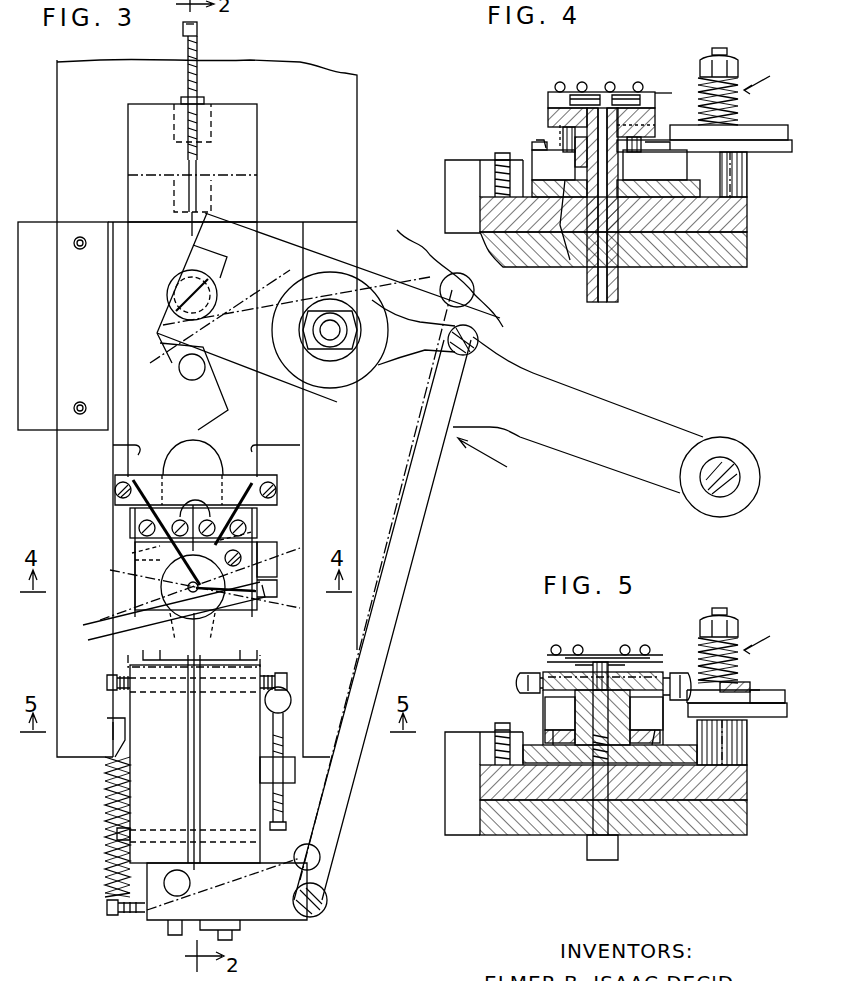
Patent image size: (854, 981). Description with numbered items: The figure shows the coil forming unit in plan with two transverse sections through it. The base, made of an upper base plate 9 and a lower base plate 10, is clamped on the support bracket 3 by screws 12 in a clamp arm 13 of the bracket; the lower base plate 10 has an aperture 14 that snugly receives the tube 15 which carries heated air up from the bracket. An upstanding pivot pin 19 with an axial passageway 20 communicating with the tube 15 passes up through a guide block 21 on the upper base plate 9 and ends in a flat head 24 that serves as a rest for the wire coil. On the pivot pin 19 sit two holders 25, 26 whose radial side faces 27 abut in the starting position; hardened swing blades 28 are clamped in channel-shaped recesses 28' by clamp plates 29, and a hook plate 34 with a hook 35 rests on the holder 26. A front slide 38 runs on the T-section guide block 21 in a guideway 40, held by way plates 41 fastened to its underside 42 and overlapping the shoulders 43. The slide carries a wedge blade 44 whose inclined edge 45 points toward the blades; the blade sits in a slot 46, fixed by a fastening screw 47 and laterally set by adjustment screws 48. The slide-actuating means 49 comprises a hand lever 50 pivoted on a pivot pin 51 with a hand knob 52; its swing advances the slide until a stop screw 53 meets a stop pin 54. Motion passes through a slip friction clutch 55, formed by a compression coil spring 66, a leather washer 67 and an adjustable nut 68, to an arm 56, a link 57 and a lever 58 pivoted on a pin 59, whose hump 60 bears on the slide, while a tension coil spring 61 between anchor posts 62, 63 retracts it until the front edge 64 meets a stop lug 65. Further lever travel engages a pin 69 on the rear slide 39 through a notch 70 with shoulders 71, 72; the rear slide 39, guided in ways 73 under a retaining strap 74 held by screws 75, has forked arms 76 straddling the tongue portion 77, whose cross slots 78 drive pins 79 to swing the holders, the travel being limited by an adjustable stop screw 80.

In FIG. 3, the support bracket 3 is at (57, 130).
In FIG. 4, the support bracket 3 is at (682, 250).
In FIG. 5, the support bracket 3 is at (515, 824).
In FIG. 4, the upper base plate 9 is at (496, 184).
In FIG. 5, the upper base plate 9 is at (496, 750).
In FIG. 4, the lower base plate 10 is at (742, 218).
In FIG. 5, the lower base plate 10 is at (742, 782).
In FIG. 3, the screws 12 is at (74, 249).
In FIG. 4, the screws 12 is at (496, 156).
In FIG. 5, the screws 12 is at (496, 726).
In FIG. 3, the clamp arm 13 is at (28, 233).
In FIG. 4, the clamp arm 13 is at (446, 170).
In FIG. 5, the clamp arm 13 is at (446, 752).
In FIG. 4, the aperture 14 is at (582, 262).
In FIG. 4, the tube 15 is at (618, 290).
In FIG. 5, the tube 15 is at (590, 860).
In FIG. 4, the pivot pin 19 is at (658, 173).
In FIG. 4, the axial passageway 20 is at (559, 173).
In FIG. 3, the guide block 21 is at (258, 652).
In FIG. 5, the guide block 21 is at (585, 765).
In FIG. 3, the head 24 is at (178, 603).
In FIG. 3, the holder 25 is at (135, 572).
In FIG. 4, the holder 25 is at (548, 115).
In FIG. 3, the holder 26 is at (262, 514).
In FIG. 4, the holder 26 is at (655, 120).
In FIG. 3, the side faces 27 is at (195, 515).
In FIG. 3, the swing blades 28 is at (200, 518).
In FIG. 4, the swing blades 28 is at (607, 74).
In FIG. 5, the swing blades 28 is at (605, 633).
In FIG. 4, the channel-shaped recesses 28' is at (590, 77).
In FIG. 5, the channel-shaped recesses 28' is at (601, 637).
In FIG. 3, the clamp plates 29 is at (138, 528).
In FIG. 4, the clamp plates 29 is at (565, 95).
In FIG. 5, the clamp plates 29 is at (560, 650).
In FIG. 3, the hook plate 34 is at (277, 560).
In FIG. 3, the hook 35 is at (276, 586).
In FIG. 3, the front slide 38 is at (132, 710).
In FIG. 5, the front slide 38 is at (548, 676).
In FIG. 3, the rear slide 39 is at (245, 152).
In FIG. 5, the guideway 40 is at (565, 765).
In FIG. 5, the way plates 41 is at (545, 733).
In FIG. 5, the underside 42 is at (545, 706).
In FIG. 5, the shoulders 43 is at (553, 675).
In FIG. 3, the wedge blade 44 is at (225, 613).
In FIG. 5, the wedge blade 44 is at (590, 660).
In FIG. 3, the edge 45 is at (245, 602).
In FIG. 3, the slot 46 is at (201, 775).
In FIG. 5, the slot 46 is at (606, 660).
In FIG. 3, the fastening screw 47 is at (112, 820).
In FIG. 3, the adjustment screws 48 is at (107, 680).
In FIG. 5, the adjustment screws 48 is at (518, 680).
In FIG. 3, the slide-actuating means 49 is at (491, 461).
In FIG. 3, the hand lever 50 is at (535, 380).
In FIG. 4, the hand lever 50 is at (772, 152).
In FIG. 5, the hand lever 50 is at (770, 717).
In FIG. 3, the pivot pin 51 is at (330, 322).
In FIG. 4, the pivot pin 51 is at (720, 48).
In FIG. 5, the pivot pin 51 is at (720, 608).
In FIG. 3, the hand knob 52 is at (722, 440).
In FIG. 3, the stop screw 53 is at (272, 744).
In FIG. 3, the stop pin 54 is at (290, 706).
In FIG. 5, the stop pin 54 is at (686, 734).
In FIG. 3, the slip friction clutch 55 is at (363, 291).
In FIG. 4, the slip friction clutch 55 is at (766, 75).
In FIG. 5, the slip friction clutch 55 is at (766, 635).
In FIG. 3, the arm 56 is at (400, 355).
In FIG. 4, the arm 56 is at (770, 125).
In FIG. 5, the arm 56 is at (775, 692).
In FIG. 3, the link 57 is at (422, 516).
In FIG. 5, the link 57 is at (766, 690).
In FIG. 3, the lever 58 is at (295, 918).
In FIG. 3, the pin 59 is at (172, 888).
In FIG. 3, the hump 60 is at (235, 870).
In FIG. 3, the tension coil spring 61 is at (106, 856).
In FIG. 3, the anchor post 62 is at (112, 726).
In FIG. 3, the anchor post 63 is at (130, 918).
In FIG. 3, the front edge 64 is at (250, 922).
In FIG. 3, the stop lug 65 is at (236, 938).
In FIG. 4, the compression coil spring 66 is at (738, 88).
In FIG. 5, the compression coil spring 66 is at (738, 648).
In FIG. 4, the washer 67 is at (738, 125).
In FIG. 5, the washer 67 is at (748, 682).
In FIG. 3, the adjustable nut 68 is at (333, 347).
In FIG. 4, the adjustable nut 68 is at (700, 62).
In FIG. 5, the adjustable nut 68 is at (700, 622).
In FIG. 3, the pin 69 is at (172, 284).
In FIG. 3, the notch 70 is at (212, 266).
In FIG. 3, the front shoulder 71 is at (170, 296).
In FIG. 3, the rear shoulder 72 is at (190, 240).
In FIG. 3, the ways 73 is at (128, 455).
In FIG. 4, the ways 73 is at (532, 158).
In FIG. 3, the retaining strap 74 is at (192, 480).
In FIG. 4, the retaining strap 74 is at (532, 147).
In FIG. 3, the screws 75 is at (114, 490).
In FIG. 3, the arms 76 is at (190, 452).
In FIG. 4, the arms 76 is at (563, 145).
In FIG. 3, the tongue portion 77 is at (128, 652).
In FIG. 4, the tongue portion 77 is at (556, 237).
In FIG. 3, the cross slots 78 is at (188, 562).
In FIG. 3, the pins 79 is at (180, 544).
In FIG. 4, the pins 79 is at (548, 130).
In FIG. 3, the adjustable stop screw 80 is at (199, 46).